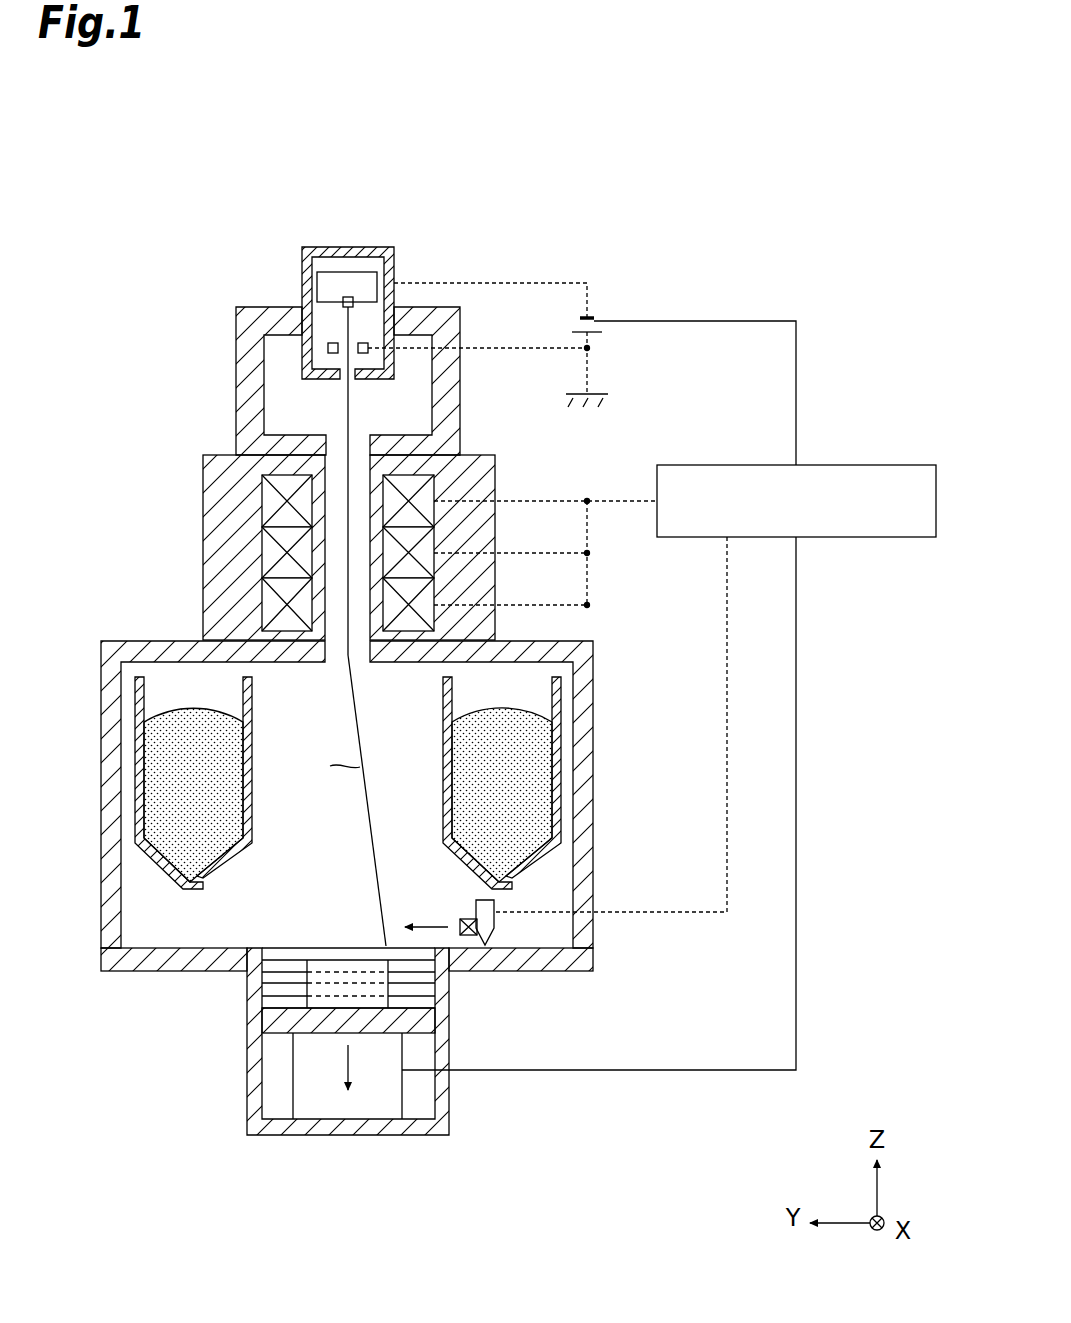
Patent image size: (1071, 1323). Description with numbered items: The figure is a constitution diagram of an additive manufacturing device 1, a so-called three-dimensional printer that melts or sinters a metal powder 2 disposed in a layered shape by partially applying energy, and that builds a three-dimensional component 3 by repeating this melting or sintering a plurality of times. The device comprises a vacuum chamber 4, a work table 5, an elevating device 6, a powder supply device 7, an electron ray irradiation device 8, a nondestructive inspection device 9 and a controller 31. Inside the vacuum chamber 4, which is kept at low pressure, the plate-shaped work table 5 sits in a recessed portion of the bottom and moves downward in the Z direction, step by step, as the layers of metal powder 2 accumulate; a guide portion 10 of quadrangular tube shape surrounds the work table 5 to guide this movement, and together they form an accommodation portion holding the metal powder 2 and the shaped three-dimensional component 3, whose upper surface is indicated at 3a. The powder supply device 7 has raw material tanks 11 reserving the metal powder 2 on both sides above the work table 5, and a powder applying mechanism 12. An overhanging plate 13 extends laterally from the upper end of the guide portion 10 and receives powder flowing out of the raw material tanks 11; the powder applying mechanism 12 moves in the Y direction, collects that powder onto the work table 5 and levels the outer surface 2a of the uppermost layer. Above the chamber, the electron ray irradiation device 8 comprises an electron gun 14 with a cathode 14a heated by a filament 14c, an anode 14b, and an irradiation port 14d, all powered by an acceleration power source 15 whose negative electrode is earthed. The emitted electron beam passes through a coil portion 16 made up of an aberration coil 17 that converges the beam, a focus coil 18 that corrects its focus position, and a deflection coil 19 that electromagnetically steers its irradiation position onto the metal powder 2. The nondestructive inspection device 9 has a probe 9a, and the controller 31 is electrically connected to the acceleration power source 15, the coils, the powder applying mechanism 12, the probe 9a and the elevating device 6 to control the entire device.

The additive manufacturing device 1 is at (816, 157).
The metal powder 2 is at (160, 770).
The outer surface 2a is at (293, 943).
The three-dimensional component 3 is at (300, 1003).
The solidified layer surface 3a is at (352, 948).
The vacuum chamber 4 is at (112, 882).
The work table 5 is at (440, 1022).
The elevating device 6 is at (315, 1108).
The powder supply device 7 is at (362, 841).
The electron ray irradiation device 8 is at (218, 252).
The nondestructive inspection device 9 is at (435, 898).
The probe 9a is at (460, 919).
The guide portion 10 is at (445, 985).
The raw material tanks 11 is at (135, 690).
The powder applying mechanism 12 is at (495, 927).
The overhanging plate 13 is at (137, 962).
The electron gun 14 is at (343, 247).
The cathode 14a is at (343, 300).
The anode 14b is at (328, 348).
The filament 14c is at (365, 272).
The irradiation port 14d is at (352, 380).
The acceleration power source 15 is at (594, 318).
The coil portion 16 is at (148, 478).
The aberration coil 17 is at (262, 500).
The focus coil 18 is at (262, 553).
The deflection coil 19 is at (262, 605).
The controller 31 is at (896, 465).